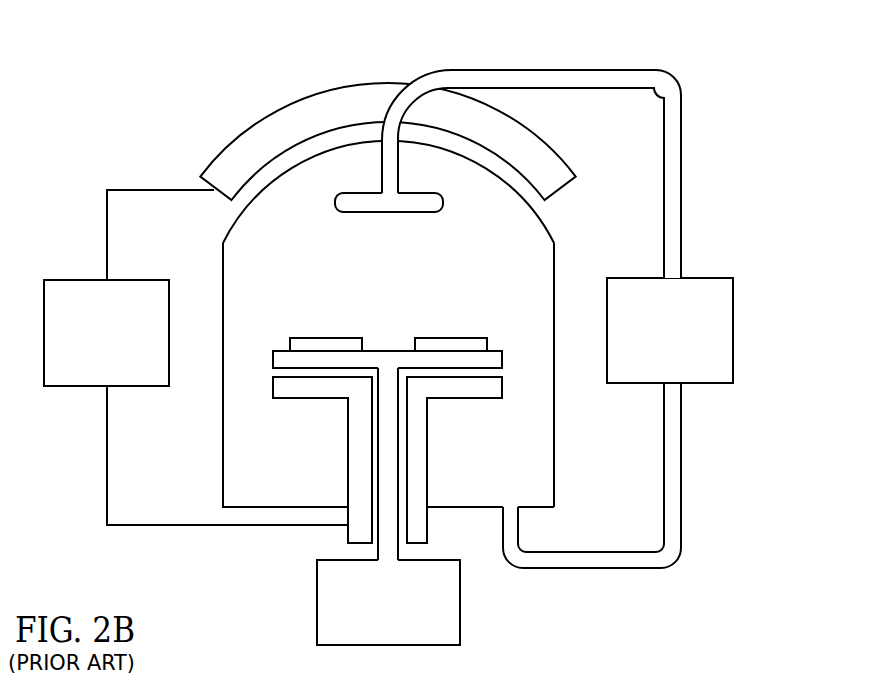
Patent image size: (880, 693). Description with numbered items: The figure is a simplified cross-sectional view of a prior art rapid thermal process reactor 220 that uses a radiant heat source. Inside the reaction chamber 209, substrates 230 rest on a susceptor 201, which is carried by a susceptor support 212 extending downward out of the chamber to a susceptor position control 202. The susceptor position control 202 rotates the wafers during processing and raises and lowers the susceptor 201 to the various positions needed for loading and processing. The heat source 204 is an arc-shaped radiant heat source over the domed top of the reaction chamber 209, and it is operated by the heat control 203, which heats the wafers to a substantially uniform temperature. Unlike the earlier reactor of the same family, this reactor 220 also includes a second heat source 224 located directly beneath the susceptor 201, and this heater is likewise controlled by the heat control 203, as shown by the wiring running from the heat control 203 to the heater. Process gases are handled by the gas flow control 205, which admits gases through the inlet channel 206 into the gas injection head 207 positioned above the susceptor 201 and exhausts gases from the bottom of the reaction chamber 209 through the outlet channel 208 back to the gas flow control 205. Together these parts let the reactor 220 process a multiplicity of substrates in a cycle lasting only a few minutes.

The susceptor 201 is at (503, 360).
The susceptor position control 202 is at (369, 641).
The heat control 203 is at (87, 372).
The heat source 204 is at (233, 144).
The gas flow control 205 is at (690, 372).
The inlet channel 206 is at (610, 69).
The gas injection head 207 is at (395, 213).
The outlet channel 208 is at (681, 526).
The reaction chamber 209 is at (223, 290).
The susceptor support 212 is at (398, 467).
The RTP reactor 220 is at (720, 217).
The second heat source 224 is at (311, 399).
The wafers 230 is at (437, 335).